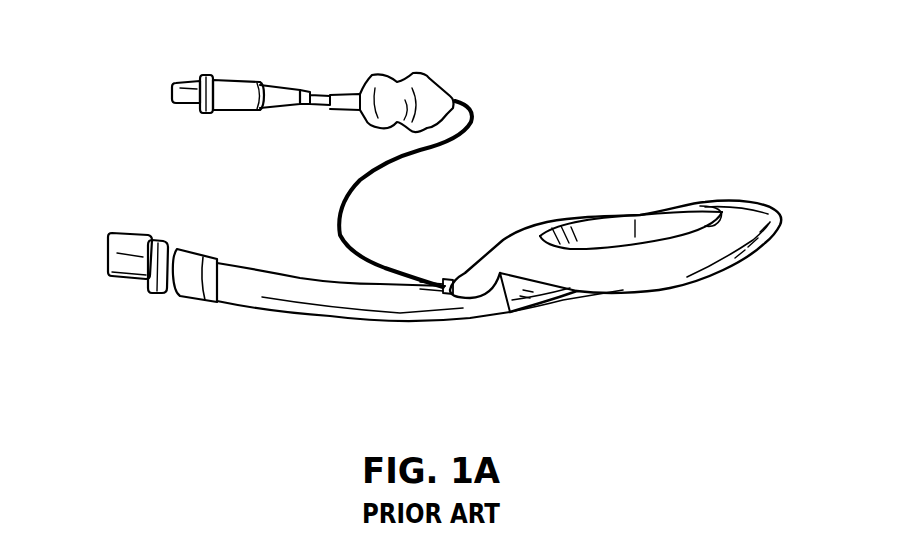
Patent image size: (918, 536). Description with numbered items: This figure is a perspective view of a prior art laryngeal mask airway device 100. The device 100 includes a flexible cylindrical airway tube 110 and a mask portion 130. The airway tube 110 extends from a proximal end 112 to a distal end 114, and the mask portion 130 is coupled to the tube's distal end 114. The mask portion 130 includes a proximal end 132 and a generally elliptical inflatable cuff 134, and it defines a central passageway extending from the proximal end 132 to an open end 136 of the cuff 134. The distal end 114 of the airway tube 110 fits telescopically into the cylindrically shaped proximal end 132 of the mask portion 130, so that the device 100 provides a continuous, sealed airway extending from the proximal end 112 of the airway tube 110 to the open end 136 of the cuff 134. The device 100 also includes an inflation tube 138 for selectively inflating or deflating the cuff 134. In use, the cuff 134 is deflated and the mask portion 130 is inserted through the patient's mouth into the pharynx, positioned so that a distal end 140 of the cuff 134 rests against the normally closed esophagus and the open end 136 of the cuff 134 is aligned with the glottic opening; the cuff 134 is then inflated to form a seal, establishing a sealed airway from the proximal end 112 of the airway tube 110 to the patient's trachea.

The laryngeal mask airway device 100 is at (563, 390).
The airway tube 110 is at (317, 317).
The proximal end 112 is at (108, 250).
The distal end 114 is at (512, 313).
The mask portion 130 is at (700, 327).
The proximal end 132 is at (542, 303).
The inflatable cuff 134 is at (765, 238).
The open end 136 is at (615, 228).
The inflation tube 138 is at (353, 68).
The distal end 140 is at (777, 218).